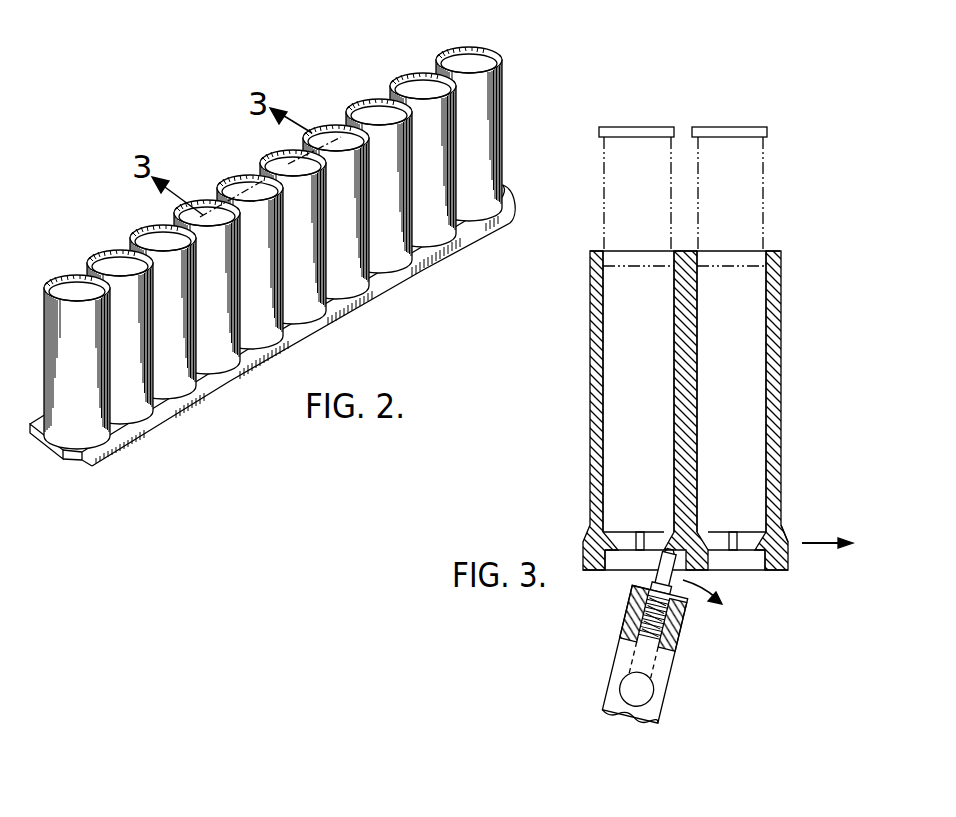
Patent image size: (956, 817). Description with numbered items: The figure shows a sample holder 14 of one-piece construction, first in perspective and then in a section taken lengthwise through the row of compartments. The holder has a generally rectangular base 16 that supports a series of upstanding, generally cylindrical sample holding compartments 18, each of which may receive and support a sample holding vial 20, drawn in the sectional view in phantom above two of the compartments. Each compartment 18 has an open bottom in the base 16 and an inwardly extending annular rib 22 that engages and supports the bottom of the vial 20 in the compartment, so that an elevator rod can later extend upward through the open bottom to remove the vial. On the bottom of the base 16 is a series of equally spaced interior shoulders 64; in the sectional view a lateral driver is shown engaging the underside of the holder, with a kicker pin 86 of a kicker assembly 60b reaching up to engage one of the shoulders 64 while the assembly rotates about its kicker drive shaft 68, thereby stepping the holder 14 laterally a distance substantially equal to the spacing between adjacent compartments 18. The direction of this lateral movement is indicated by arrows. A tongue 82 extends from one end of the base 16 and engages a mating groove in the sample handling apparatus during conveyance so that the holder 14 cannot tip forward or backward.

In FIG. 2, the sample holder 14 is at (119, 456).
In FIG. 3, the sample holder 14 is at (782, 431).
In FIG. 2, the base 16 is at (133, 430).
In FIG. 3, the base 16 is at (590, 571).
In FIG. 2, the sample holding compartment 18 is at (473, 62).
In FIG. 3, the sample holding compartment 18 is at (766, 271).
In FIG. 3, the sample holding vial 20 is at (657, 127).
In FIG. 3, the annular rib 22 is at (706, 532).
In FIG. 3, the spring-loaded plunger body 60b is at (616, 637).
In FIG. 3, the interior shoulder 64 is at (760, 570).
In FIG. 3, the kicker drive shaft 68 is at (647, 692).
In FIG. 2, the tongue 82 is at (44, 457).
In FIG. 3, the kicker pin 86 is at (658, 557).